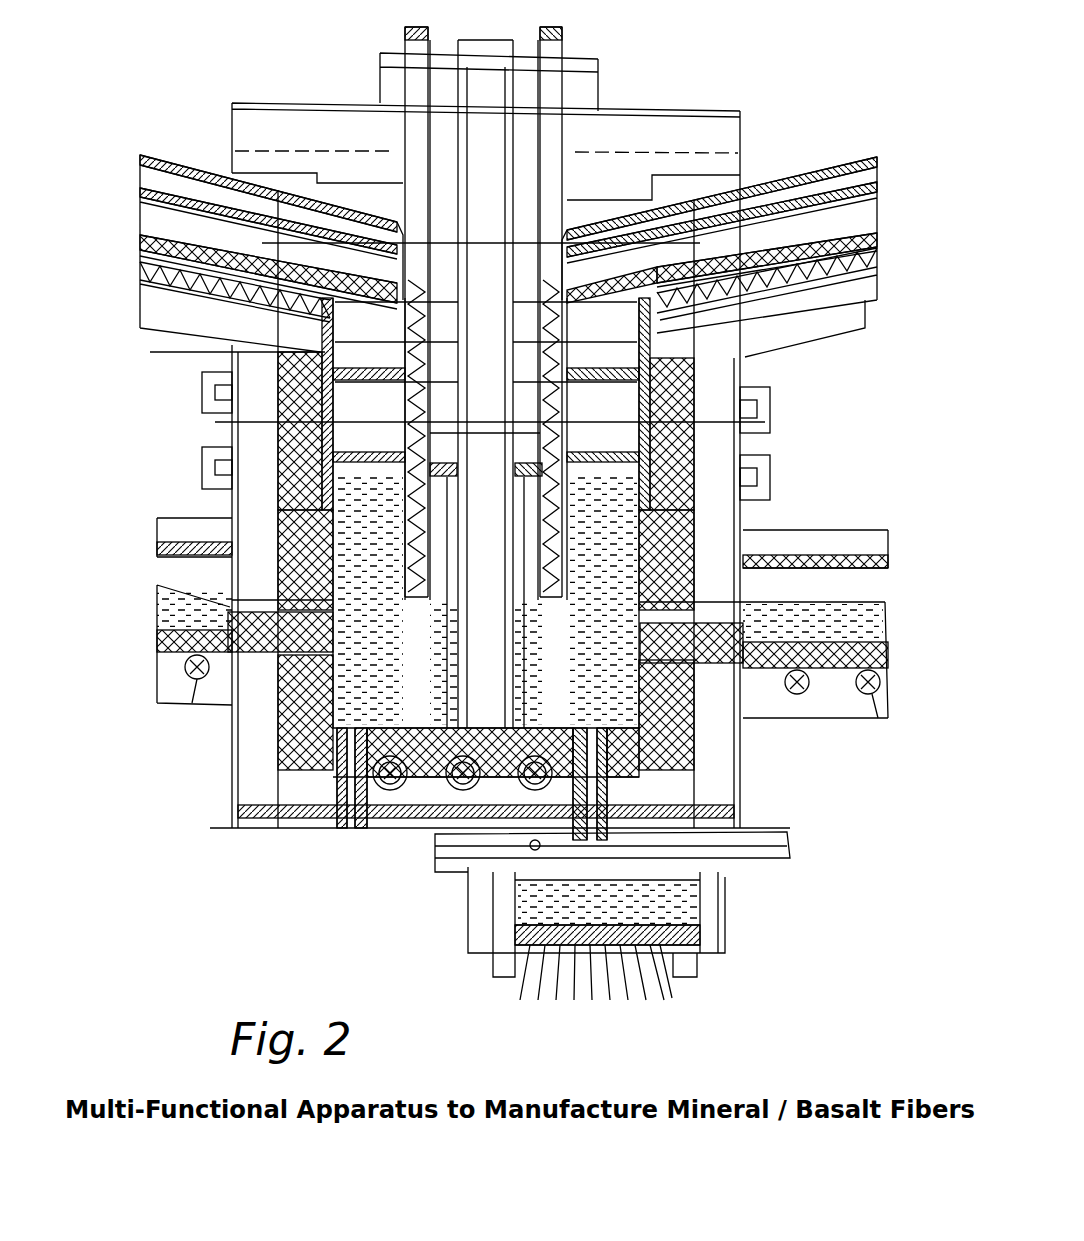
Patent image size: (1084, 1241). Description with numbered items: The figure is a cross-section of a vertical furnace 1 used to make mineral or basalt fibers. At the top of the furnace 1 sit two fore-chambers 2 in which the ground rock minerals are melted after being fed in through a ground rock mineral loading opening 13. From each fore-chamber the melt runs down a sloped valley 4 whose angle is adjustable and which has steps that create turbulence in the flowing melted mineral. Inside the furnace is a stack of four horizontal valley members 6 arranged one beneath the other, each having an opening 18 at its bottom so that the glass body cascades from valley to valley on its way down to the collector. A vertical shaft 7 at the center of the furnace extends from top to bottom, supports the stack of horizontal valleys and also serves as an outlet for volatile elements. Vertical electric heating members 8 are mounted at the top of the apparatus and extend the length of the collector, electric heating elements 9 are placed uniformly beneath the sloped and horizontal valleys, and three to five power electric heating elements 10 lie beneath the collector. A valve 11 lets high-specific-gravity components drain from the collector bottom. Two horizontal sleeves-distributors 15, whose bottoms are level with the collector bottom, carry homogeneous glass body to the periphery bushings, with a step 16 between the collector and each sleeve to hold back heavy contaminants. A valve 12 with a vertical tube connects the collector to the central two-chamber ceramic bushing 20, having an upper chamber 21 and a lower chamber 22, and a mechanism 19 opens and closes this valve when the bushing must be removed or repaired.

The vertical furnace 1 is at (702, 128).
The fore-chambers 2 is at (168, 162).
The sloped valley 4 is at (140, 243).
The stack of horizontal valley members 6 is at (217, 355).
The vertical shaft 7 is at (482, 95).
The vertical electric heating members 8 is at (410, 50).
The electric heating elements 9 is at (140, 280).
The power electric heating elements 10 is at (390, 790).
The valve 11 is at (345, 835).
The valve 12 is at (675, 845).
The ground rock mineral loading opening 13 is at (130, 218).
The horizontal sleeves-distributors 15 is at (190, 520).
The step 16 is at (245, 612).
The opening at the bottom of horizontal valley 18 is at (486, 600).
The open/close mechanism 19 is at (757, 838).
The two-chamber ceramic bushing 20 is at (690, 928).
The upper chamber 21 is at (660, 897).
The lower chamber 22 is at (712, 952).